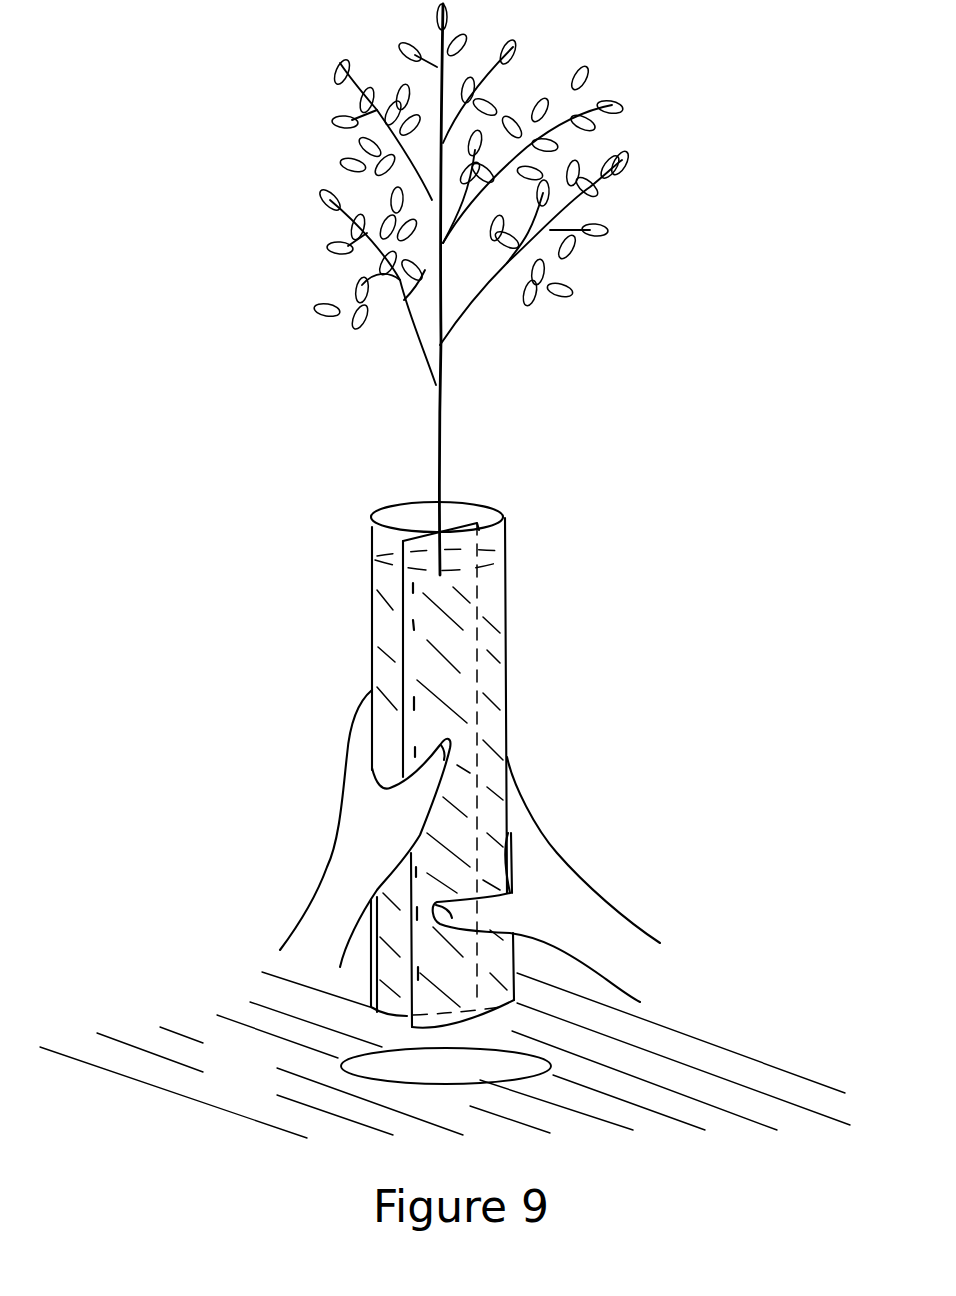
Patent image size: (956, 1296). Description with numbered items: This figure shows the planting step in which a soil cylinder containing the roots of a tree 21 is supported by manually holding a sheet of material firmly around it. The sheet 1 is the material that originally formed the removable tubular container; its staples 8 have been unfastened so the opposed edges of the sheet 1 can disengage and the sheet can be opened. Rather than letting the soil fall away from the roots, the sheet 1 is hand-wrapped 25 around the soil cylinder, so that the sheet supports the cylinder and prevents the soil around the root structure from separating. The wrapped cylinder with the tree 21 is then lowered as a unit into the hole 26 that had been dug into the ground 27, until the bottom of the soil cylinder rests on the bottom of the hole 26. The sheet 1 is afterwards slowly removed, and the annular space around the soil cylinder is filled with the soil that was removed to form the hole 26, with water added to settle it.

The sheet 1 is at (508, 503).
The staples unfastened 8 is at (398, 627).
The tree 21 is at (450, 400).
The hand-wrapping 25 is at (594, 876).
The hole 26 is at (505, 1068).
The ground 27 is at (445, 1055).